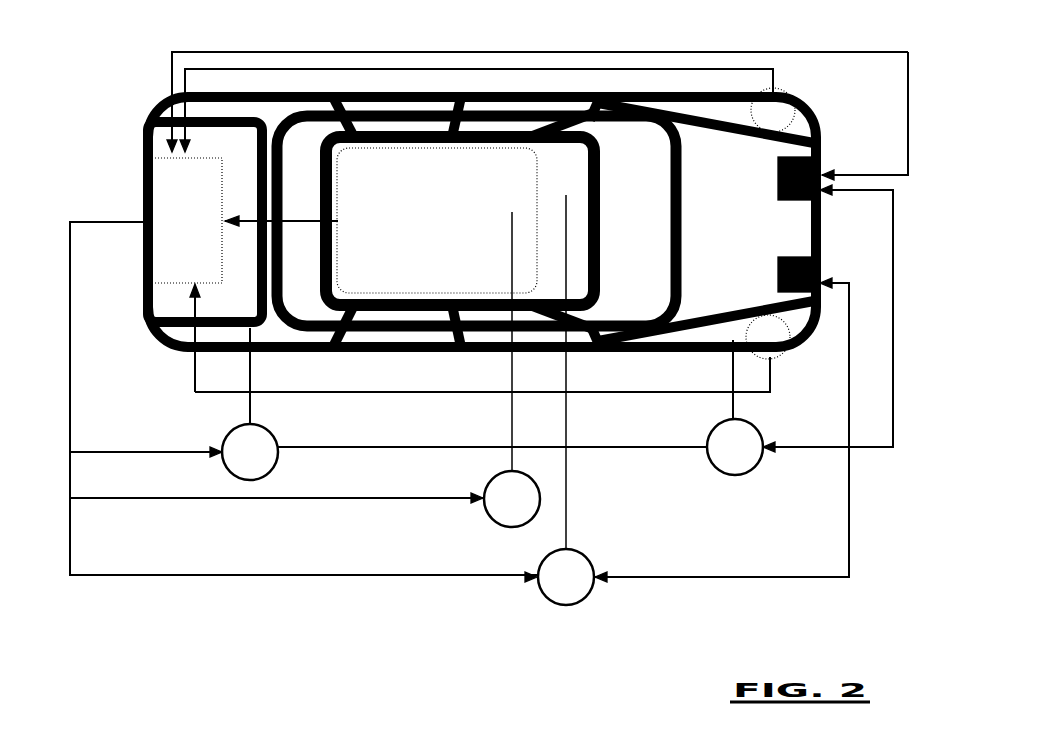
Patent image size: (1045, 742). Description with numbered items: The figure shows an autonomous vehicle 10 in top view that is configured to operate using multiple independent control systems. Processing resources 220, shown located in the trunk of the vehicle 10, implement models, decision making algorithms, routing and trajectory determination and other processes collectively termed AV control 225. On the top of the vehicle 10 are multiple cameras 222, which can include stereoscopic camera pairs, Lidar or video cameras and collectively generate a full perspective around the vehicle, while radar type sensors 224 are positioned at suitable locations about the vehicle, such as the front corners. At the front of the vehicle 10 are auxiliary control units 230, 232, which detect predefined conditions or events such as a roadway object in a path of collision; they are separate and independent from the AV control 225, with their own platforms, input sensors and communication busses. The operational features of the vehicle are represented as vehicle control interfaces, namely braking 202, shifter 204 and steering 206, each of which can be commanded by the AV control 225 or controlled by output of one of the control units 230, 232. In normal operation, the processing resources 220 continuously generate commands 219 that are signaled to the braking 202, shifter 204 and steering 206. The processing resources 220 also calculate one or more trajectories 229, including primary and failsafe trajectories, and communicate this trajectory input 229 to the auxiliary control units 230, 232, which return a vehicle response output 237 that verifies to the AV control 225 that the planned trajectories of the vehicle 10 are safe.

The autonomous vehicle 10 is at (108, 87).
The braking 202 is at (283, 458).
The shifter 204 is at (487, 478).
The steering 206 is at (590, 597).
The commands 219 is at (303, 429).
The processing resources 220 is at (202, 186).
The cameras 222 is at (454, 222).
The radar type sensors 224 is at (773, 107).
The AV control 225 is at (187, 203).
The trajectories 229 is at (558, 162).
The auxiliary control unit 230 is at (778, 272).
The auxiliary control unit 232 is at (778, 183).
The vehicle response output 237 is at (546, 301).